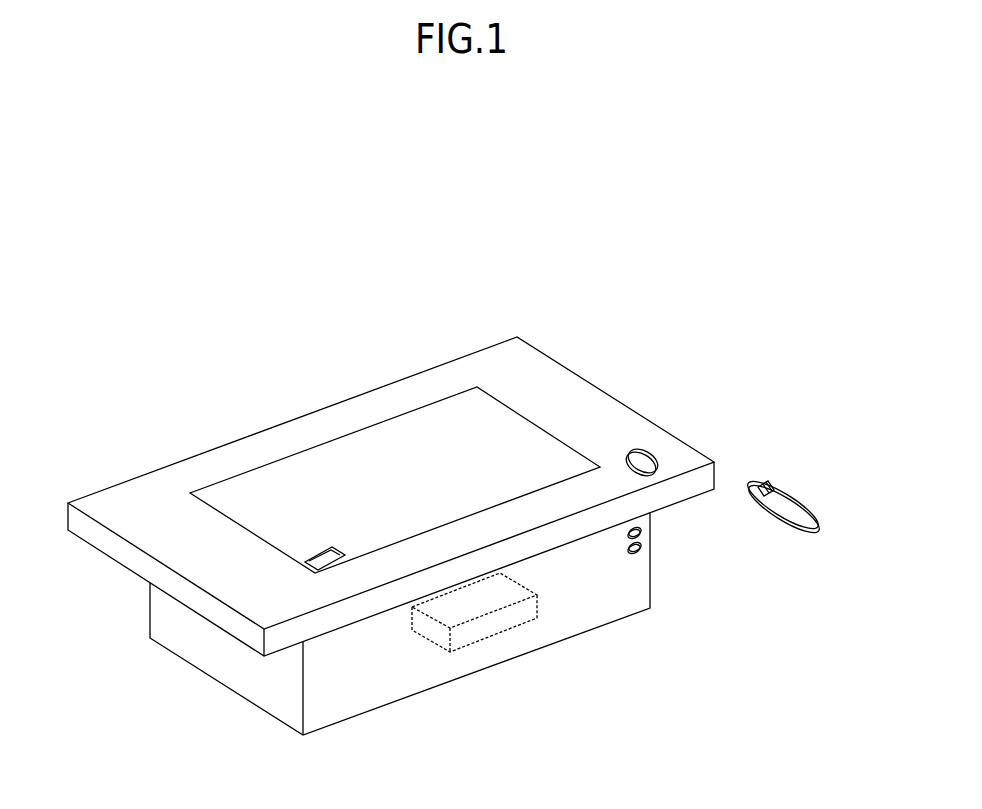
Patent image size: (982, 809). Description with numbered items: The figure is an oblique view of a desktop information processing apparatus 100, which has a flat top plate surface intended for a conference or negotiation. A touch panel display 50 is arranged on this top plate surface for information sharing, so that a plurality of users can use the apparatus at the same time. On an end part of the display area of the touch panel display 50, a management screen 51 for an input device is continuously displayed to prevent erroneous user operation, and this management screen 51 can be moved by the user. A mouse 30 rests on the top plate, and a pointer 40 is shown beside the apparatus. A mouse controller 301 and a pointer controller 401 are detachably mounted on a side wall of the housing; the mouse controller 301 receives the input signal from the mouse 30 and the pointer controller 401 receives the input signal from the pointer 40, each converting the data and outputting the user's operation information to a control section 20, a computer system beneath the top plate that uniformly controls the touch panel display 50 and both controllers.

The desktop information processing apparatus 100 is at (542, 316).
The touch panel display 50 is at (401, 437).
The management screen 51 is at (315, 575).
The mouse 30 is at (650, 450).
The mouse controller 301 is at (643, 536).
The pointer controller 401 is at (643, 546).
The pointer 40 is at (790, 502).
The control section 20 is at (520, 617).